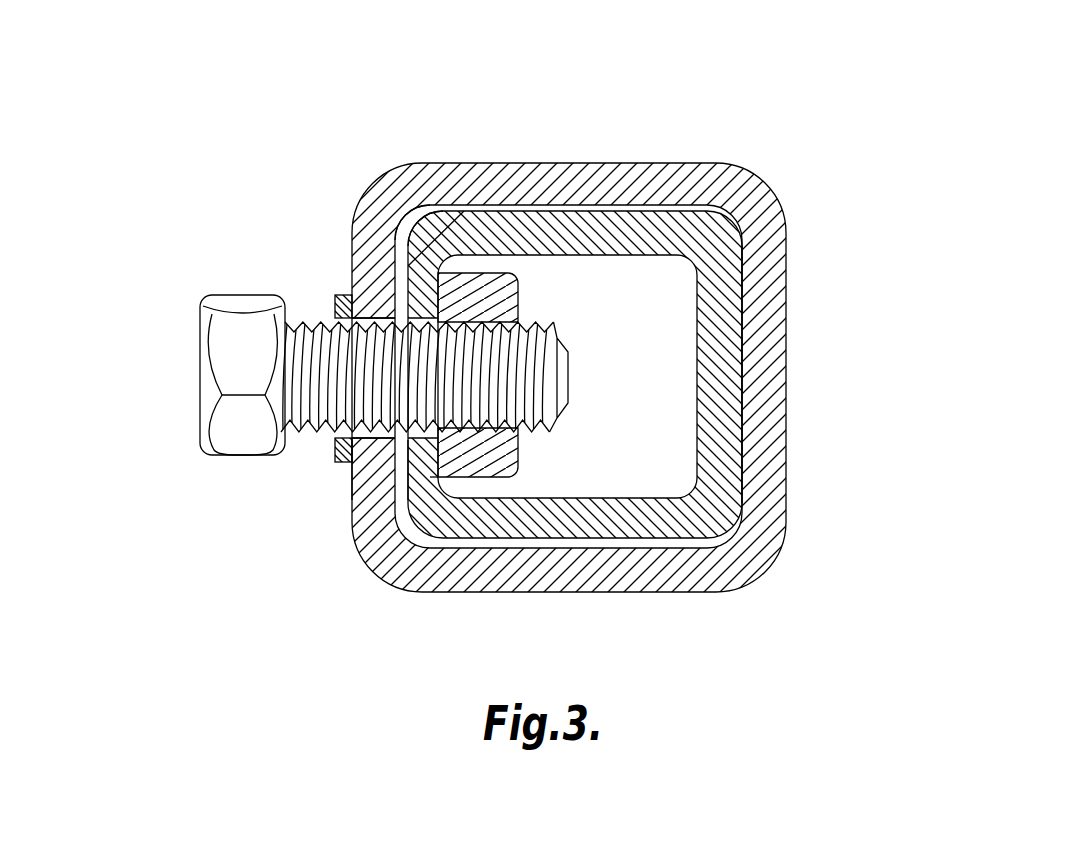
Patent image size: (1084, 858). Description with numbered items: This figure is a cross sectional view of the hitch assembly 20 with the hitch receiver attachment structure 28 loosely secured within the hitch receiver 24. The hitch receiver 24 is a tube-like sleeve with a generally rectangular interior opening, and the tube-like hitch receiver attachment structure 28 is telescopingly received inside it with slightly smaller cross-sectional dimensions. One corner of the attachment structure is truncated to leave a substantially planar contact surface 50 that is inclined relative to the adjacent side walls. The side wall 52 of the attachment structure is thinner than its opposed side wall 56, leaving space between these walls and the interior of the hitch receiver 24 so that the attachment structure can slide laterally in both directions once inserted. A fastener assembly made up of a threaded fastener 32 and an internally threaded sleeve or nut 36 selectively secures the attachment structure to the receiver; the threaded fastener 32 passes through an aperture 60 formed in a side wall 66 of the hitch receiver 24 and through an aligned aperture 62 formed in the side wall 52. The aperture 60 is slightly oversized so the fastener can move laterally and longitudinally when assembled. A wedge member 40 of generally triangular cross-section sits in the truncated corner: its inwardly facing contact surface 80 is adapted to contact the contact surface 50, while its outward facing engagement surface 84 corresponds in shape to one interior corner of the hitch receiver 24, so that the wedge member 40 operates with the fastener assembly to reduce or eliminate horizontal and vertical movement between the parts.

The hitch assembly 20 is at (179, 152).
The hitch receiver 24 is at (670, 173).
The hitch receiver attachment structure 28 is at (717, 230).
The threaded fastener 32 is at (232, 298).
The internally threaded sleeve or nut 36 is at (477, 470).
The wedge member 40 is at (393, 243).
The contact surface 50 is at (417, 247).
The side wall 52 is at (415, 495).
The side wall 56 is at (733, 407).
The aperture 60 is at (337, 294).
The aperture 62 is at (358, 268).
The side wall 66 is at (362, 478).
The contact surface 80 is at (446, 228).
The engagement surface 84 is at (407, 207).